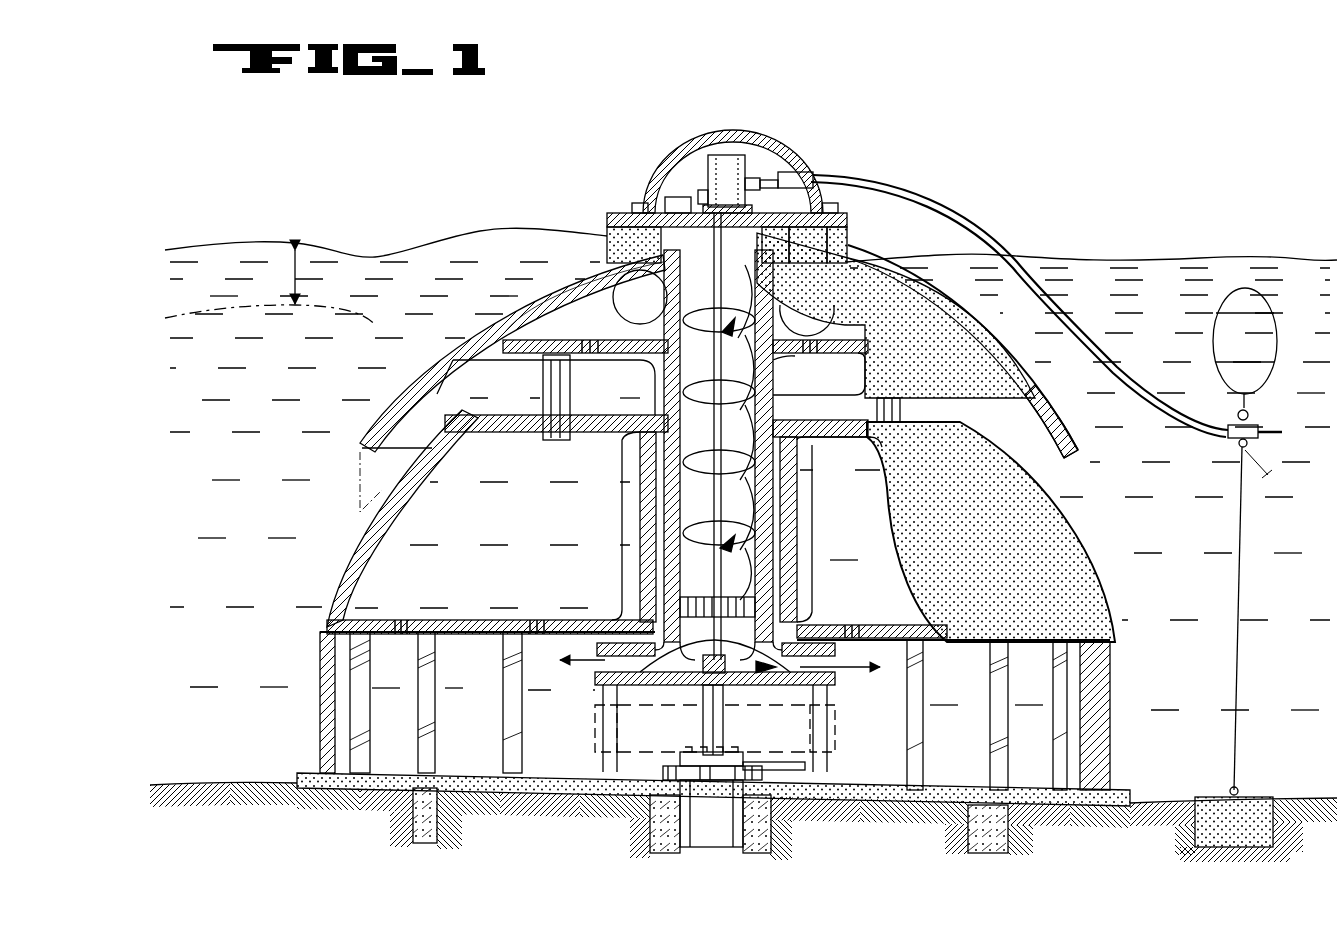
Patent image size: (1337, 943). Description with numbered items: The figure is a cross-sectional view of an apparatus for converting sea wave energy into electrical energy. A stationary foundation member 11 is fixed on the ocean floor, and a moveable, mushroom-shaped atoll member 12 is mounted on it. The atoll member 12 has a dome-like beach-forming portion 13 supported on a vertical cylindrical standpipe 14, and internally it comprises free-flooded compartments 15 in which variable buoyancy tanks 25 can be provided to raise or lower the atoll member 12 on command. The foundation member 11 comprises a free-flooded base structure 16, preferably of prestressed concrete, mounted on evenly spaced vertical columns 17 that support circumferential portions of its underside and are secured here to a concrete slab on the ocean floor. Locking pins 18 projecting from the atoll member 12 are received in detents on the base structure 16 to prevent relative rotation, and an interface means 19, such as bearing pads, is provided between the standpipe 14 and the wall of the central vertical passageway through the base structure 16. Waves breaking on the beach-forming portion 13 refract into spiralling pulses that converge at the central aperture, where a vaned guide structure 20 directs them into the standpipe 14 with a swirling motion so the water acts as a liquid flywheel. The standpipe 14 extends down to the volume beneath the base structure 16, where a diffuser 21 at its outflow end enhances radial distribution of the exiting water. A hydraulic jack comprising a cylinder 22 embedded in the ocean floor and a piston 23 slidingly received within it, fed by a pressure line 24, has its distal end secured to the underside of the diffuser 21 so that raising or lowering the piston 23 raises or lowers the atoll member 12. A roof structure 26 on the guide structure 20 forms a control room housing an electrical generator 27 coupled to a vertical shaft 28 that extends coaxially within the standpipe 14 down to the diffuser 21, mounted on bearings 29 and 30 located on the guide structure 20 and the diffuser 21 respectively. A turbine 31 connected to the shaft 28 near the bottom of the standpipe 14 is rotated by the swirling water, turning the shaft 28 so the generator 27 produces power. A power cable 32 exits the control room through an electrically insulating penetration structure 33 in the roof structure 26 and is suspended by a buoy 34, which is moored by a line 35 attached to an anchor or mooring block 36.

The foundation member 11 is at (330, 578).
The atoll member 12 is at (408, 362).
The beach-forming portion 13 is at (514, 292).
The standpipe 14 is at (664, 403).
The free-flooded compartments 15 is at (580, 325).
The base structure 16 is at (355, 533).
The vertical columns 17 is at (365, 718).
The locking pins 18 is at (545, 384).
The interface means 19 is at (645, 462).
The guide structure 20 is at (608, 230).
The diffuser 21 is at (838, 690).
The cylinder 22 is at (765, 826).
The piston 23 is at (706, 705).
The pressure line 24 is at (795, 790).
The variable buoyancy tanks 25 is at (627, 308).
The roof structure 26 is at (702, 134).
The electrical generator 27 is at (700, 181).
The vertical shaft 28 is at (716, 291).
The bearing 29 is at (790, 201).
The bearing 30 is at (800, 640).
The turbine 31 is at (702, 598).
The power cable 32 is at (930, 195).
The penetration structure 33 is at (806, 174).
The buoy 34 is at (1230, 352).
The line 35 is at (1240, 545).
The mooring block 36 is at (1254, 796).